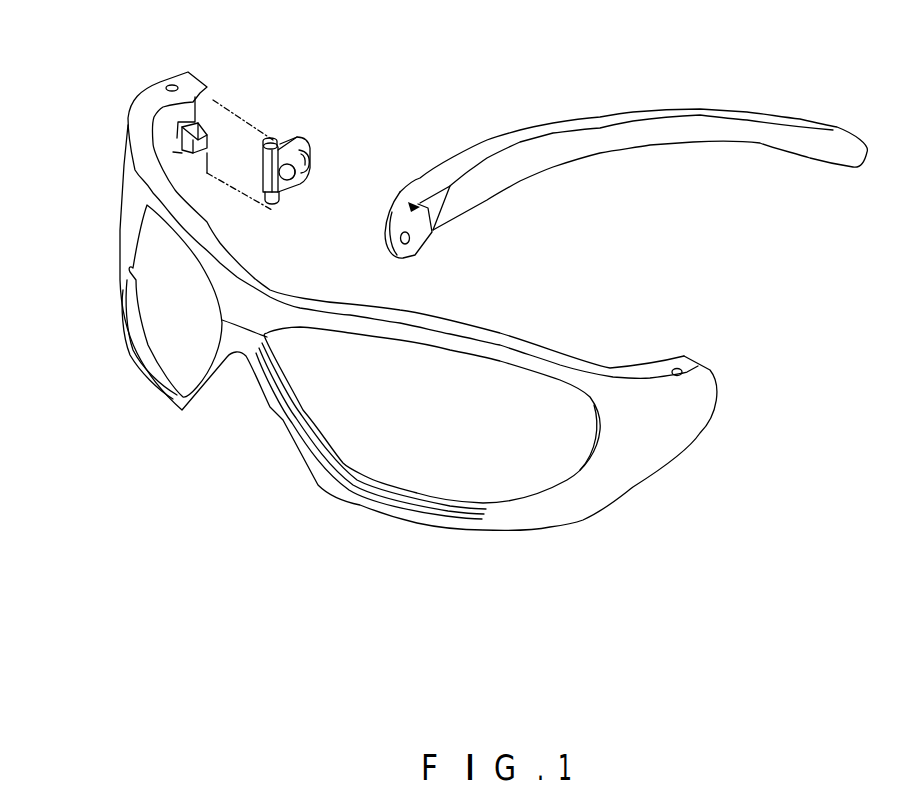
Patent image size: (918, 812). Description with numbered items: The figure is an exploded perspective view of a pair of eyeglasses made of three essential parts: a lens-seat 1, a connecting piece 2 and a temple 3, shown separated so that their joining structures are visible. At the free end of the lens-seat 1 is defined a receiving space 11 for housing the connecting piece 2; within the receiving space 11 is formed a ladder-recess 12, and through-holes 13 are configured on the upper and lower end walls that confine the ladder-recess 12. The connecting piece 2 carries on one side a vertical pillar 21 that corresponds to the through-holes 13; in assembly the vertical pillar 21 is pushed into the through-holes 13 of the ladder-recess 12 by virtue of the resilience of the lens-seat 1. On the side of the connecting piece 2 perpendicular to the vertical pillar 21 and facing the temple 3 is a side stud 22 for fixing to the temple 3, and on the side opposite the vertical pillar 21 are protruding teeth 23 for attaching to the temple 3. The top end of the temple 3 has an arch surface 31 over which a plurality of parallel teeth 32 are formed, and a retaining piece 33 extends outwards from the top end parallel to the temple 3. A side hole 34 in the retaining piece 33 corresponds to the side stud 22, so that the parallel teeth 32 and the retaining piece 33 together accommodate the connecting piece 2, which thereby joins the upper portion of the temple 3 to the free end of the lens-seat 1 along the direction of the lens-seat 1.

The lens-seat 1 is at (92, 171).
The receiving space 11 is at (208, 113).
The ladder-recess 12 is at (200, 105).
The through-holes 13 is at (170, 85).
The connecting piece 2 is at (337, 107).
The vertical pillar 21 is at (273, 142).
The side stud 22 is at (291, 166).
The protruding teeth 23 is at (312, 156).
The temple 3 is at (566, 198).
The arch surface 31 is at (387, 219).
The parallel teeth 32 is at (410, 204).
The retaining piece 33 is at (420, 233).
The side hole 34 is at (413, 250).